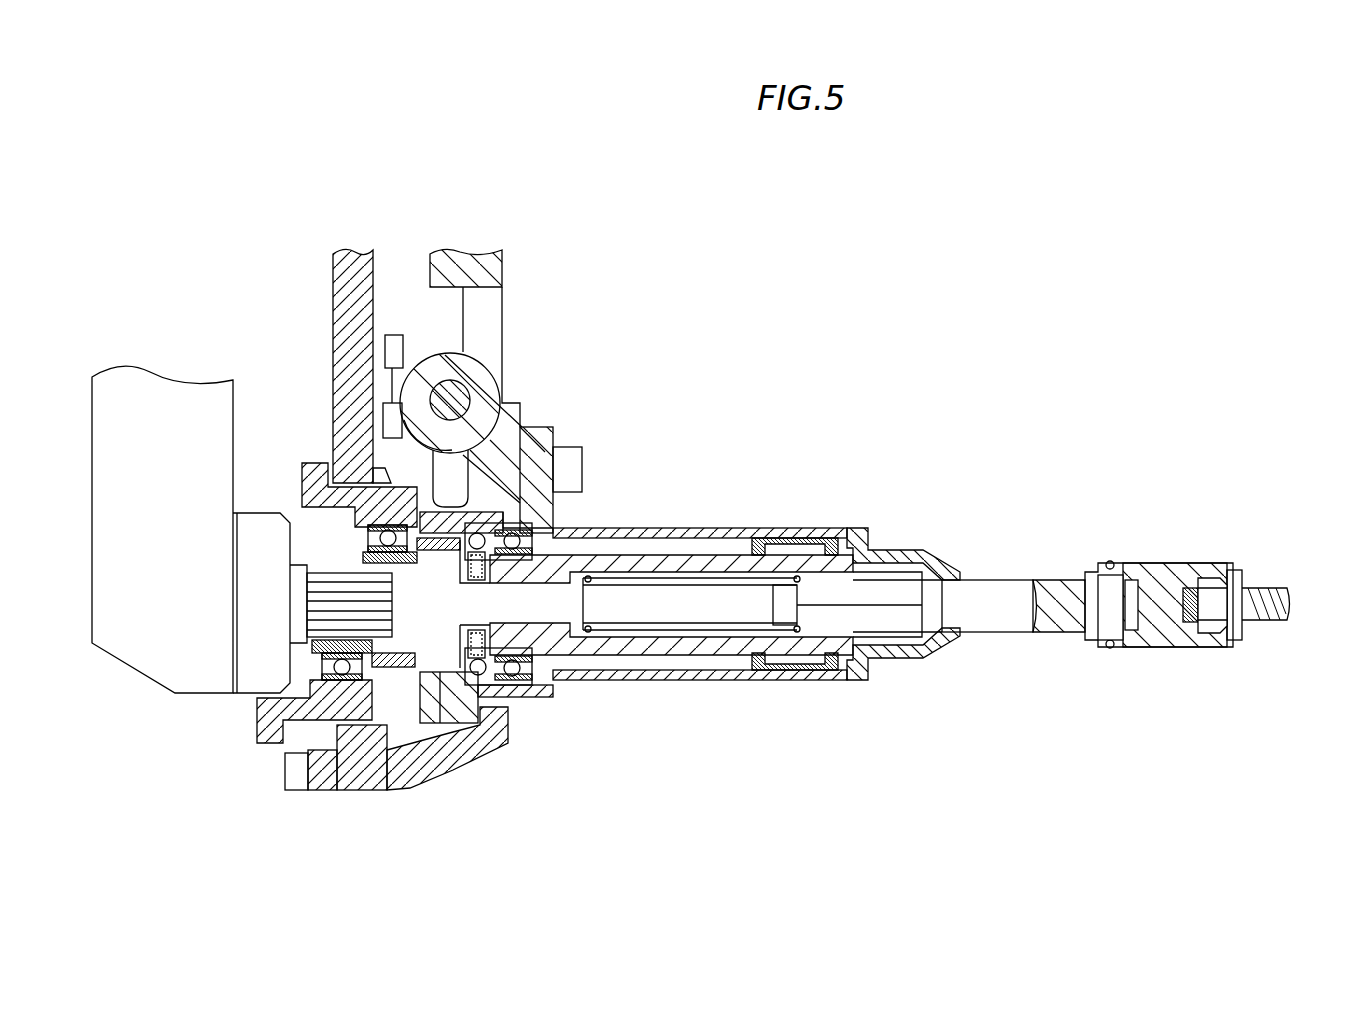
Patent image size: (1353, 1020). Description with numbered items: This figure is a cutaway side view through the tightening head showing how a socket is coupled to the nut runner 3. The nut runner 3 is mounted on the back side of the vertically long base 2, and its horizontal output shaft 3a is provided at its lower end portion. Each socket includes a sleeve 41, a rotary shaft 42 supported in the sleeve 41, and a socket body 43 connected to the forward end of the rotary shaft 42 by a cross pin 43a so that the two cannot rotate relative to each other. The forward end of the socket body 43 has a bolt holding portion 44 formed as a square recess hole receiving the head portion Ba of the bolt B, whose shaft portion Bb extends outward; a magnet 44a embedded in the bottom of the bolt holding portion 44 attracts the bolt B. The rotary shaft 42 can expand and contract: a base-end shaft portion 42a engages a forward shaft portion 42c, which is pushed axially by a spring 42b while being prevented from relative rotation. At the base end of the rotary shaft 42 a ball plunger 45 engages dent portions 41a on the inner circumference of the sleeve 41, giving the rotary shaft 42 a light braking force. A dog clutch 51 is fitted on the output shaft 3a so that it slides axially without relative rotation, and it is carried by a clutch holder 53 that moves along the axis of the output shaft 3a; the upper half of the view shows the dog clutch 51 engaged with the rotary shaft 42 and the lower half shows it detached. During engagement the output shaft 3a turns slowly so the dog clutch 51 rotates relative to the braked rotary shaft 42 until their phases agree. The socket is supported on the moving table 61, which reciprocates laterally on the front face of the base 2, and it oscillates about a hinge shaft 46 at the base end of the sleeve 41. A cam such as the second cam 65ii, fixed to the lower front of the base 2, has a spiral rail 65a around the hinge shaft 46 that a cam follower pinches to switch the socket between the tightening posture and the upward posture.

The base 2 is at (373, 273).
The nut runner 3 is at (92, 548).
The output shaft 3a is at (325, 575).
The sleeve 41 is at (628, 681).
The dent portion 41a is at (462, 676).
The rotary shaft 42 is at (679, 547).
The shaft portion 42a is at (615, 553).
The spring 42b is at (697, 637).
The shaft portion 42c is at (987, 633).
The socket body 43 is at (1160, 647).
The cross pin 43a is at (1105, 627).
The bolt holding portion 44 is at (1210, 580).
The magnet 44a is at (1187, 587).
The ball plunger 45 is at (480, 680).
The hinge shaft 46 is at (453, 385).
The dog clutch 51 is at (438, 552).
The clutch holder 53 is at (310, 463).
The moving table 61 is at (502, 273).
The rail 65a is at (453, 495).
The second cam 65ii is at (375, 333).
The bolt B is at (1292, 580).
The head portion Ba is at (1210, 630).
The shaft portion Bb is at (1273, 625).